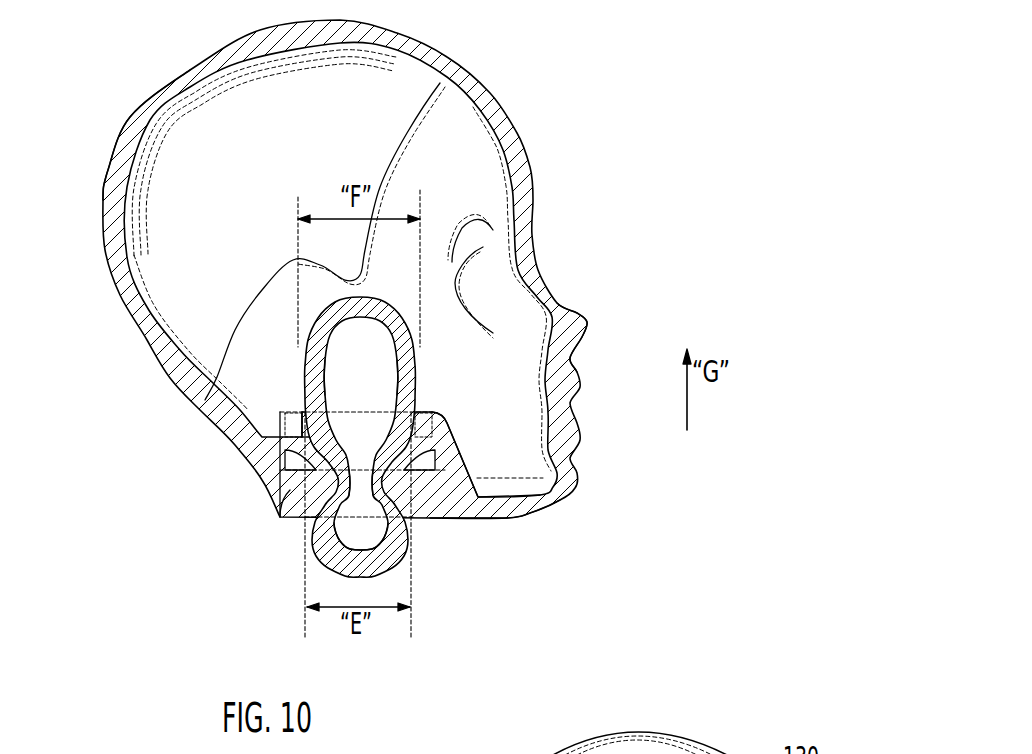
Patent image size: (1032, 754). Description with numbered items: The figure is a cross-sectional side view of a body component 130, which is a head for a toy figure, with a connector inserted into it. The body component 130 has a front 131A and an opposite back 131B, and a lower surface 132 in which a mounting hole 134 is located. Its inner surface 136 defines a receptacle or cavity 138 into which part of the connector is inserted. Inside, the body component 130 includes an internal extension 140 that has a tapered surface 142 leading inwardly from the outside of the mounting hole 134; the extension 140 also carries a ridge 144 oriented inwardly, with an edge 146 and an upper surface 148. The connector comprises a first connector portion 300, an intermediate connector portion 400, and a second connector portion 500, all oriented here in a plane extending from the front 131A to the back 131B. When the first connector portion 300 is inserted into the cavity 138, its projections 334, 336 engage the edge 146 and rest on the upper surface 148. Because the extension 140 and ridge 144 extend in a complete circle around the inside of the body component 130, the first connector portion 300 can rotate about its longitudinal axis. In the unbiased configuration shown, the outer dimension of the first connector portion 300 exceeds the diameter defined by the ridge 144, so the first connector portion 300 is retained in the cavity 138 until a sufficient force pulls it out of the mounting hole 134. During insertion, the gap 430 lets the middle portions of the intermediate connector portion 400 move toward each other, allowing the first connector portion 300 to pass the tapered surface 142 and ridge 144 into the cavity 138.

The body component 130 is at (497, 92).
The front 131A is at (540, 277).
The back 131B is at (112, 165).
The lower surface 132 is at (507, 518).
The mounting hole 134 is at (293, 517).
The inner surface 136 is at (143, 140).
The cavity 138 is at (347, 153).
The extension 140 is at (450, 450).
The tapered surface 142 is at (283, 493).
The ridge 144 is at (307, 455).
The edge 146 is at (307, 438).
The upper surface 148 is at (307, 438).
The first connector portion 300 is at (357, 296).
The projection 334 is at (300, 400).
The projection 336 is at (416, 407).
The intermediate connector portion 400 is at (390, 472).
The gap 430 is at (359, 440).
The second connector portion 500 is at (383, 548).